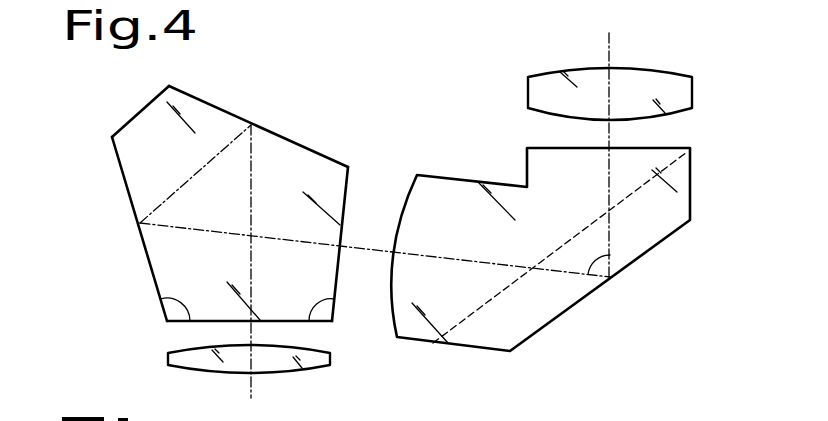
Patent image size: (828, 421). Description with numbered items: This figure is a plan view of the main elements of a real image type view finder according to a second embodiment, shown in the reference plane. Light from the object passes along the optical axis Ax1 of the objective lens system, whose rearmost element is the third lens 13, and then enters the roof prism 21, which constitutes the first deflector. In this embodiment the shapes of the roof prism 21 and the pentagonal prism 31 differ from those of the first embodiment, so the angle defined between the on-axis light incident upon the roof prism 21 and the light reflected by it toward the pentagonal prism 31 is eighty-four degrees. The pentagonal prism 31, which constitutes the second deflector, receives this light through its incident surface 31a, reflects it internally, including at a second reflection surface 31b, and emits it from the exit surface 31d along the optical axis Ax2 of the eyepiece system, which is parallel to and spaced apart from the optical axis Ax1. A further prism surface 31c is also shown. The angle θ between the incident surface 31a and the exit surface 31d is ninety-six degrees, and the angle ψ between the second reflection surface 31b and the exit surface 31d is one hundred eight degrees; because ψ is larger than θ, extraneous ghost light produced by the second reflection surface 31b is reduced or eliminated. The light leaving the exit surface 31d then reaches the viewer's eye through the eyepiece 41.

The pentagonal prism 31 is at (268, 88).
The incident surface 31a is at (351, 197).
The second reflection surface 31b is at (143, 251).
The prism surface 31c is at (300, 144).
The exit surface 31d is at (290, 323).
The eyepiece 41 is at (287, 368).
The third lens 13 is at (663, 92).
The roof prism 21 is at (573, 313).
The optical axis Ax1 is at (610, 50).
The optical axis Ax2 is at (252, 327).